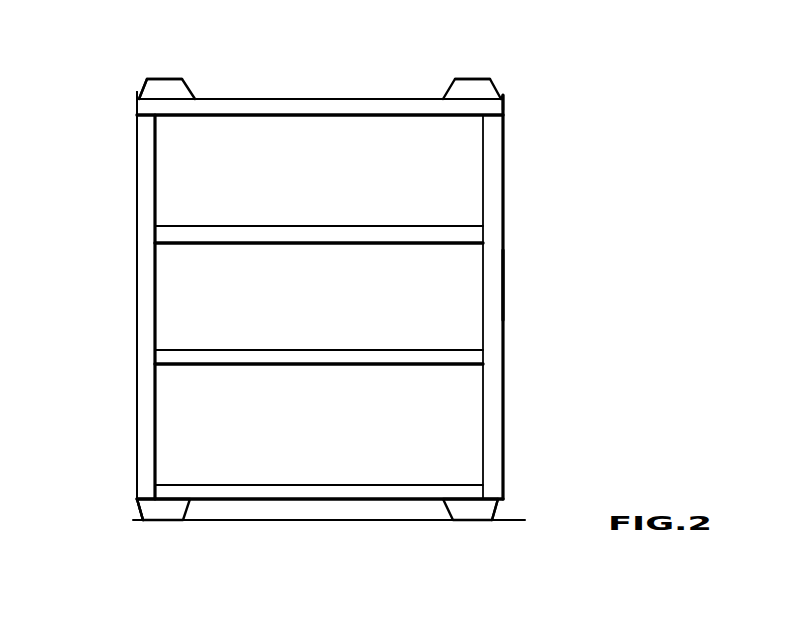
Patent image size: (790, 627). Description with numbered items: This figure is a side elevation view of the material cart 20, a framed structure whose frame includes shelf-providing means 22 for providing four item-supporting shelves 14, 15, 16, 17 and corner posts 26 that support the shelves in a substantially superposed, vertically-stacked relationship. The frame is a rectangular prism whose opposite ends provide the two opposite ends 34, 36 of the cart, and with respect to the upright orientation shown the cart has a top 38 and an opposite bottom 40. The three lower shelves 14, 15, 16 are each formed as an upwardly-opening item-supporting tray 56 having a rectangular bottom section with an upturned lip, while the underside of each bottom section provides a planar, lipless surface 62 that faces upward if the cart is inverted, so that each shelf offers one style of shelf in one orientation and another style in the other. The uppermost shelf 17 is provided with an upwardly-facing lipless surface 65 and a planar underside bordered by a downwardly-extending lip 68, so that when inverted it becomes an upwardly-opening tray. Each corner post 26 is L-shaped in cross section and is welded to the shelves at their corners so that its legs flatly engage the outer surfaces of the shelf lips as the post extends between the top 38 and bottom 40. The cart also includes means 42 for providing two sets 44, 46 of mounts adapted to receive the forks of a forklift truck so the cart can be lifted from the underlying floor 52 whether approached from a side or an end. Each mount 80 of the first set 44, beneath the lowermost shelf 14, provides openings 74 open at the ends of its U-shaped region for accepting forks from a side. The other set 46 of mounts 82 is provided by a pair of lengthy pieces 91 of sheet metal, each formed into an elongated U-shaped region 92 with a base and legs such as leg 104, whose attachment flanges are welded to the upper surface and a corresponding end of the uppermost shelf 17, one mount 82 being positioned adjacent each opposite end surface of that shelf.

The shelf 14 is at (332, 484).
The shelf 15 is at (340, 350).
The shelf 16 is at (334, 226).
The uppermost shelf 17 is at (300, 99).
The material cart 20 is at (540, 233).
The shelf-providing means 22 is at (111, 281).
The corner posts 26 is at (136, 332).
The end 34 is at (138, 405).
The end 36 is at (503, 393).
The top 38 is at (345, 99).
The bottom 40 is at (395, 520).
The mount-providing means 42 is at (129, 83).
The first set of mounts 44 is at (120, 505).
The second set of mounts 46 is at (115, 99).
The floor 52 is at (230, 520).
The item-supporting tray 56 is at (223, 226).
The underside surface 62 is at (406, 245).
The lipless surface 65 is at (386, 99).
The downwardly-extending lip 68 is at (393, 117).
The openings 74 is at (182, 510).
The mount 80 is at (137, 503).
The mount 82 is at (159, 79).
The lengthy piece of material 91 is at (500, 90).
The U-shaped region 92 is at (182, 79).
The leg 104 is at (137, 92).